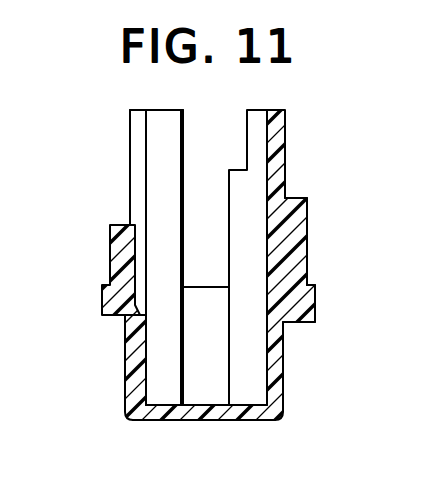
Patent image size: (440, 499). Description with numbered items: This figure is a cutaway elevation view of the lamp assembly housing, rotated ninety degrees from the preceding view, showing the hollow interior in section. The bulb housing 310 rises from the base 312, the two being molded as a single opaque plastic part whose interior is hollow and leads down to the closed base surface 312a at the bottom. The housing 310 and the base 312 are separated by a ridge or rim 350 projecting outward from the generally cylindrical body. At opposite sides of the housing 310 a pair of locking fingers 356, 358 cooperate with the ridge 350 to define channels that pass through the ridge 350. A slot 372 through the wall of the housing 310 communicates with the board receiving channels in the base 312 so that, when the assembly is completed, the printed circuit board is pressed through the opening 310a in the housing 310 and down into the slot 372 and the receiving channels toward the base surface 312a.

The bulb housing 310 is at (286, 143).
The opening in the housing 310a is at (183, 110).
The slot 372 is at (184, 159).
The locking finger 356 is at (307, 217).
The ridge 350 is at (315, 305).
The locking finger 358 is at (112, 318).
The base 312 is at (283, 357).
The base surface 312a is at (185, 420).